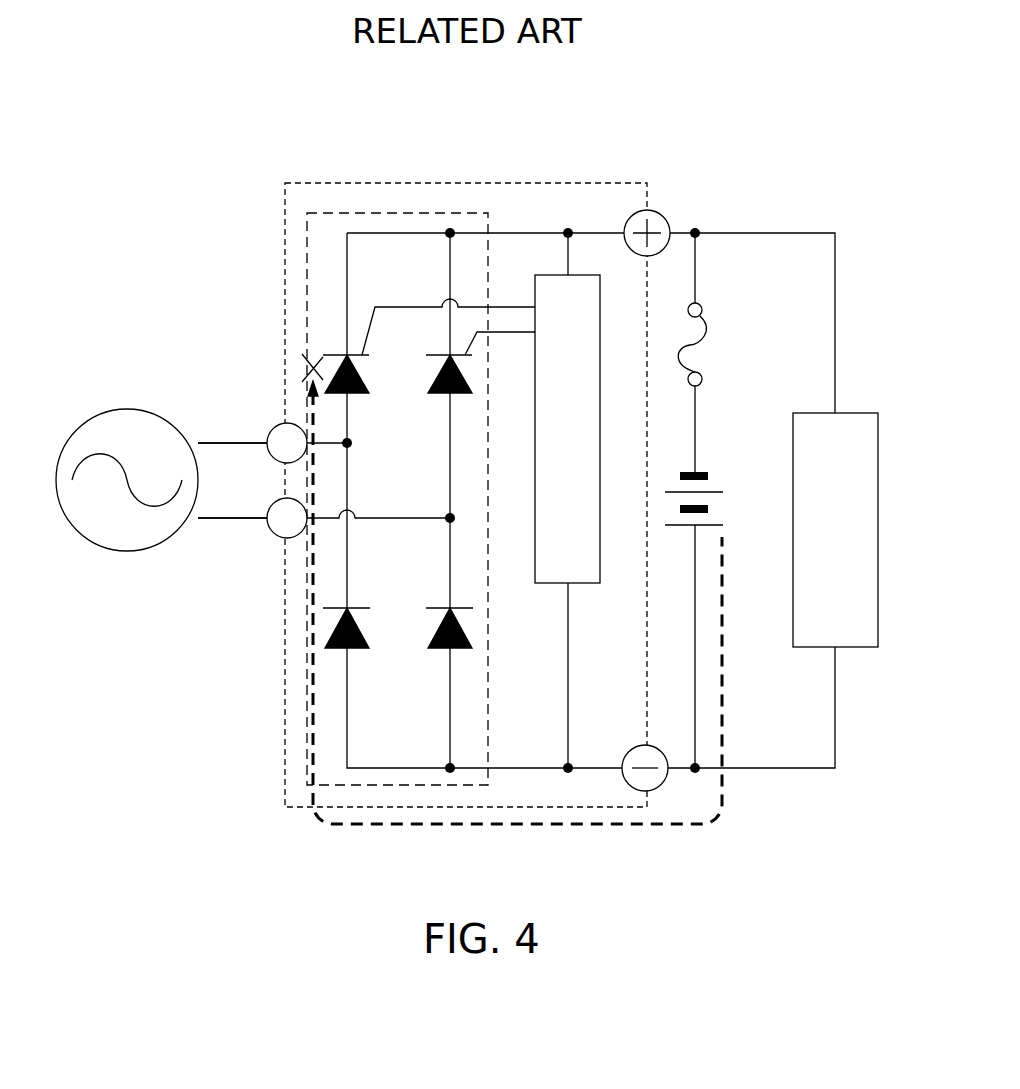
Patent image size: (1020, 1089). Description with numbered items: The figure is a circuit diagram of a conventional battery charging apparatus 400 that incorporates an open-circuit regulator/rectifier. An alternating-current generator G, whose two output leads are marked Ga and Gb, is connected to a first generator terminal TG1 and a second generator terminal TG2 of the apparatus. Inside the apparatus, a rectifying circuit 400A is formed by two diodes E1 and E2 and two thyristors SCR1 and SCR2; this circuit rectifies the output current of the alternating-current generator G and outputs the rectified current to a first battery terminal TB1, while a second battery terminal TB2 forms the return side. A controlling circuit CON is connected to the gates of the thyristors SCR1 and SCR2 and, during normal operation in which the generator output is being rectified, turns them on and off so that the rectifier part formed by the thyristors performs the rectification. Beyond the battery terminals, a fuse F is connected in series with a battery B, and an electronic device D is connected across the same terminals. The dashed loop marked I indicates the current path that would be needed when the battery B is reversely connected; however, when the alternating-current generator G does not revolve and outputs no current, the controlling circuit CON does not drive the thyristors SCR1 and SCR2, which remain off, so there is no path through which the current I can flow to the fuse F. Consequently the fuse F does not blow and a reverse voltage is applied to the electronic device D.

The battery charging apparatus 400 is at (558, 181).
The rectifying circuit 400A is at (395, 213).
The alternating-current generator G is at (130, 408).
The generator output terminal a Ga is at (192, 440).
The generator output terminal b Gb is at (188, 520).
The first generator terminal TG1 is at (269, 428).
The second generator terminal TG2 is at (270, 535).
The thyristor SCR1 is at (358, 373).
The thyristor SCR2 is at (437, 398).
The diode E1 is at (366, 628).
The diode E2 is at (469, 628).
The controlling circuit CON is at (585, 585).
The first battery terminal TB1 is at (648, 208).
The second battery terminal TB2 is at (656, 791).
The fuse F is at (708, 335).
The battery B is at (708, 476).
The electronic device D is at (850, 413).
The current I is at (722, 790).